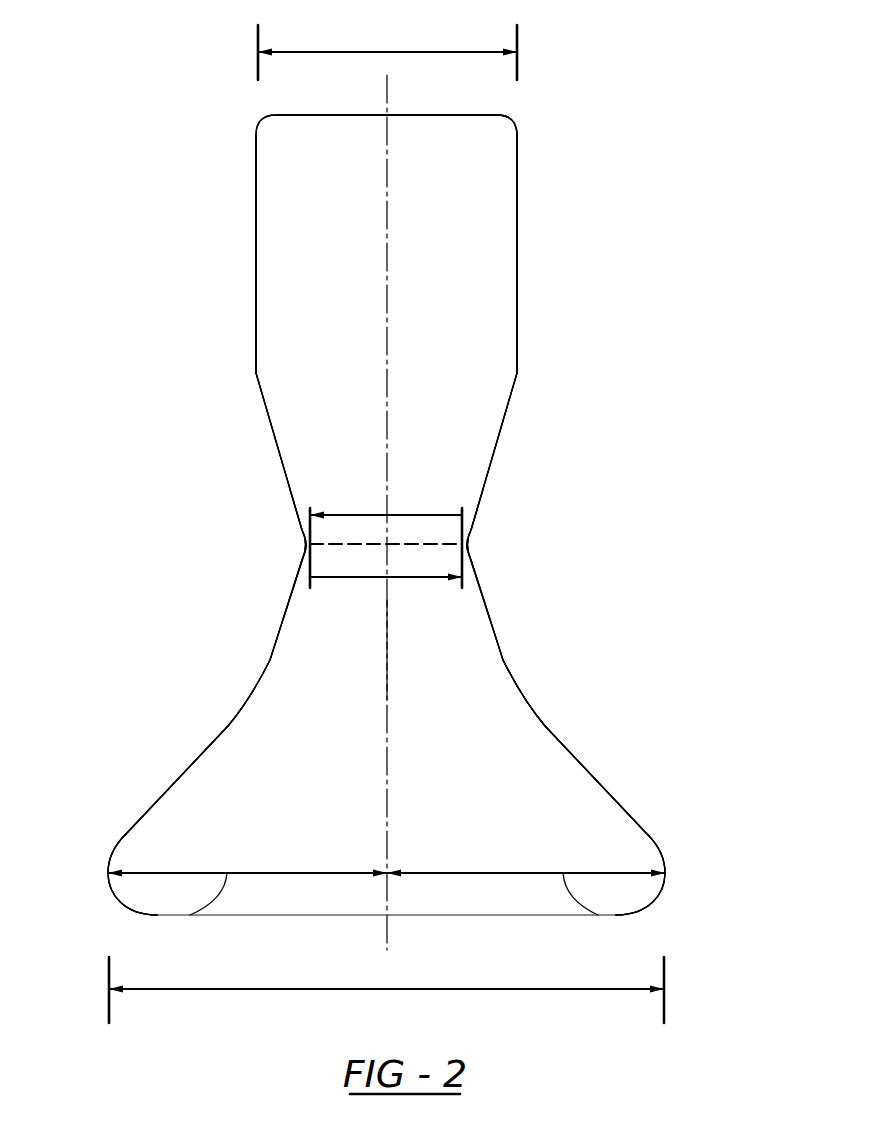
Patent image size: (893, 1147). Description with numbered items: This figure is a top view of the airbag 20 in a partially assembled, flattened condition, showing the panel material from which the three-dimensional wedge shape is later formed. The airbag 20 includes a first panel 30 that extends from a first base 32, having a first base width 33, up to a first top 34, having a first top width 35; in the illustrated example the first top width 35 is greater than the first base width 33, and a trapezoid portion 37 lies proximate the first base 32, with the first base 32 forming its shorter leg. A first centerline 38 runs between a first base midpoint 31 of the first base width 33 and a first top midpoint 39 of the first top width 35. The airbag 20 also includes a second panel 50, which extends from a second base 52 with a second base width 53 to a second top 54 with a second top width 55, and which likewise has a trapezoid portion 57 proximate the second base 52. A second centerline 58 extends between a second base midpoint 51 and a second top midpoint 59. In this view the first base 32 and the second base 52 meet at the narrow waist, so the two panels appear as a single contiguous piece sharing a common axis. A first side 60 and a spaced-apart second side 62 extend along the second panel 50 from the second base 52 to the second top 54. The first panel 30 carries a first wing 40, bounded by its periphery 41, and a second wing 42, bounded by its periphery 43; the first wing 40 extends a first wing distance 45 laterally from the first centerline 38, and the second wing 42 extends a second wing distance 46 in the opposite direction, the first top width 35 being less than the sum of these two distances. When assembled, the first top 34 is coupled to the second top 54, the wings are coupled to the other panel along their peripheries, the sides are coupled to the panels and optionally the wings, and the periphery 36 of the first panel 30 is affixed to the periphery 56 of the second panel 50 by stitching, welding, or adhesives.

The airbag 20 is at (637, 95).
The first panel 30 is at (497, 730).
The first base midpoint 31 is at (387, 544).
The first base 32 is at (440, 540).
The first base width 33 is at (348, 577).
The first top 34 is at (502, 915).
The first top width 35 is at (289, 990).
The periphery of the first panel 36 is at (225, 712).
The trapezoid portion 37 is at (453, 667).
The first centerline 38 is at (387, 874).
The first top midpoint 39 is at (390, 915).
The first wing 40 is at (530, 777).
The periphery of the first wing 41 is at (643, 827).
The second wing 42 is at (195, 847).
The periphery of the second wing 43 is at (165, 795).
The first wing distance 45 is at (598, 915).
The second wing distance 46 is at (192, 914).
The second panel 50 is at (497, 187).
The second base midpoint 51 is at (387, 544).
The second base 52 is at (440, 540).
The second base width 53 is at (345, 513).
The second top 54 is at (337, 115).
The second top width 55 is at (372, 52).
The periphery of the second panel 56 is at (235, 255).
The trapezoid portion 57 is at (340, 418).
The second centerline 58 is at (387, 208).
The second top midpoint 59 is at (387, 115).
The first side 60 is at (516, 335).
The second side 62 is at (257, 335).